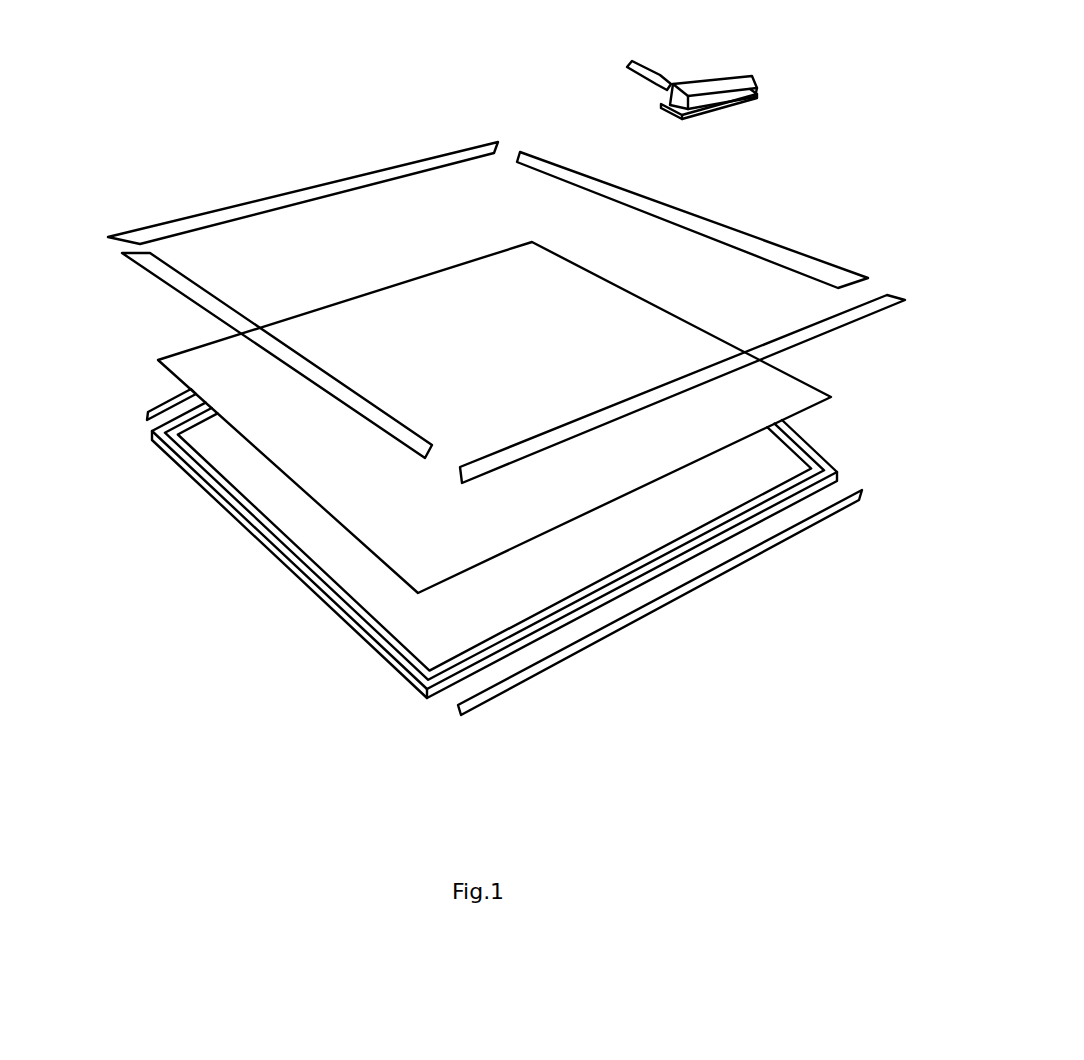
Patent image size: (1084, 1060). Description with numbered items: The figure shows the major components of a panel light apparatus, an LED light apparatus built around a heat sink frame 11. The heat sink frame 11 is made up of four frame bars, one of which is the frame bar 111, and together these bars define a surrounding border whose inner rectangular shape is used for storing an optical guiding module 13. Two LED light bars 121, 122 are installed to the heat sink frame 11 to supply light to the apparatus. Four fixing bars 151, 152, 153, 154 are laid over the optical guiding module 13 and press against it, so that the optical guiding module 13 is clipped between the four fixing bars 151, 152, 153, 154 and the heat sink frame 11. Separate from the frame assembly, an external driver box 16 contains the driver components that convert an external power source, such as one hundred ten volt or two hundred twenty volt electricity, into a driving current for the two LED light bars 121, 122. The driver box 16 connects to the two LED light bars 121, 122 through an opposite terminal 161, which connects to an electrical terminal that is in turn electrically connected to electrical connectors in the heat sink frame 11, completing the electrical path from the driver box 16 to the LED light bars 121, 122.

The heat sink frame 11 is at (837, 472).
The frame bar 111 is at (460, 660).
The LED light bar 121 is at (150, 407).
The LED light bar 122 is at (803, 536).
The optical guiding module 13 is at (393, 300).
The fixing bar 151 is at (815, 328).
The fixing bar 152 is at (190, 283).
The fixing bar 153 is at (218, 210).
The fixing bar 154 is at (752, 242).
The external driver box 16 is at (722, 77).
The opposite terminal 161 is at (646, 67).